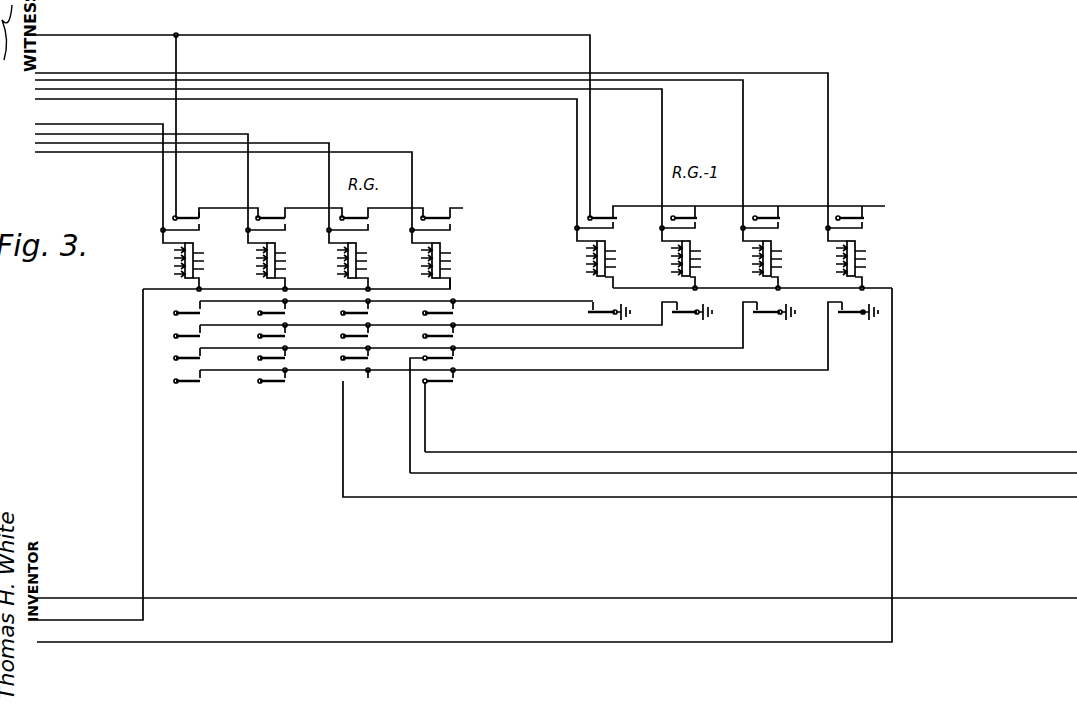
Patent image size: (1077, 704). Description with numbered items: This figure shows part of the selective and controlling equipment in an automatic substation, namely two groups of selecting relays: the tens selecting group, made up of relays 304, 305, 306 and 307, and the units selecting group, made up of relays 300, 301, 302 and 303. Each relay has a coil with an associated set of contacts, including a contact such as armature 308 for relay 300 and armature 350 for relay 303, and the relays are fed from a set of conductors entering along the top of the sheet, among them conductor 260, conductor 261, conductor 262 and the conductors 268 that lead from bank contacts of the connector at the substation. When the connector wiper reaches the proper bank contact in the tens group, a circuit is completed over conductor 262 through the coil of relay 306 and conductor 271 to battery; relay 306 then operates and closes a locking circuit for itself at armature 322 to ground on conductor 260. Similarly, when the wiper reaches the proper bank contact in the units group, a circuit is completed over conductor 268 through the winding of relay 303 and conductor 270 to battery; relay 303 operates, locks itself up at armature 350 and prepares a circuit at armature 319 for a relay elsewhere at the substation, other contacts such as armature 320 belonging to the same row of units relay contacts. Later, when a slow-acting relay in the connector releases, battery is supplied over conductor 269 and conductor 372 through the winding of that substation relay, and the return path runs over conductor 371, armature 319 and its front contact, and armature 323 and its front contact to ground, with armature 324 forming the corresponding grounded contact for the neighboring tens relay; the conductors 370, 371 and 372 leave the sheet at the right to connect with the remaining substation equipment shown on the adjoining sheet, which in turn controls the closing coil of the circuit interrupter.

The conductor 260 is at (139, 35).
The conductor 261 is at (88, 73).
The conductor 262 is at (127, 80).
The conductor 268 is at (91, 154).
The conductor 269 is at (112, 588).
The conductor 270 is at (110, 620).
The conductor 271 is at (113, 643).
The selecting relay 300 is at (179, 238).
The selecting relay 301 is at (266, 267).
The selecting relay 302 is at (347, 267).
The relay 303 is at (427, 237).
The selecting relay 304 is at (596, 264).
The selecting relay 305 is at (681, 264).
The relay 306 is at (756, 236).
The selecting relay 307 is at (846, 264).
The relay contact 308 is at (178, 217).
The armature 319 is at (455, 362).
The relay contact 320 is at (451, 383).
The armature 322 is at (758, 217).
The armature 323 is at (760, 315).
The relay contact 324 is at (842, 315).
The armature 350 is at (430, 216).
The conductor 370 is at (1044, 441).
The conductor 371 is at (1055, 473).
The conductor 372 is at (1041, 598).